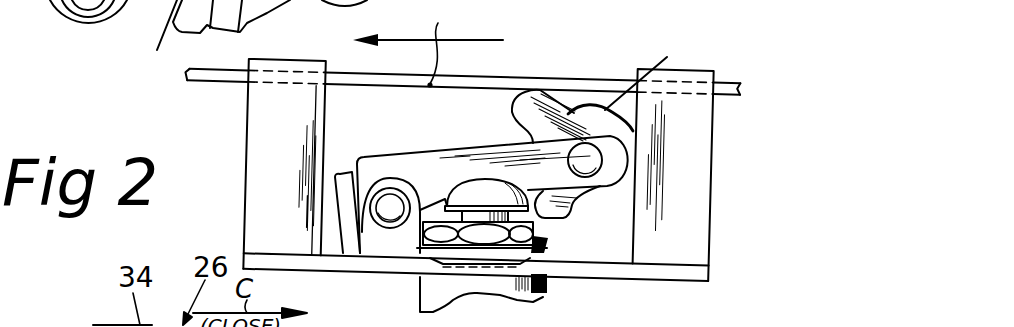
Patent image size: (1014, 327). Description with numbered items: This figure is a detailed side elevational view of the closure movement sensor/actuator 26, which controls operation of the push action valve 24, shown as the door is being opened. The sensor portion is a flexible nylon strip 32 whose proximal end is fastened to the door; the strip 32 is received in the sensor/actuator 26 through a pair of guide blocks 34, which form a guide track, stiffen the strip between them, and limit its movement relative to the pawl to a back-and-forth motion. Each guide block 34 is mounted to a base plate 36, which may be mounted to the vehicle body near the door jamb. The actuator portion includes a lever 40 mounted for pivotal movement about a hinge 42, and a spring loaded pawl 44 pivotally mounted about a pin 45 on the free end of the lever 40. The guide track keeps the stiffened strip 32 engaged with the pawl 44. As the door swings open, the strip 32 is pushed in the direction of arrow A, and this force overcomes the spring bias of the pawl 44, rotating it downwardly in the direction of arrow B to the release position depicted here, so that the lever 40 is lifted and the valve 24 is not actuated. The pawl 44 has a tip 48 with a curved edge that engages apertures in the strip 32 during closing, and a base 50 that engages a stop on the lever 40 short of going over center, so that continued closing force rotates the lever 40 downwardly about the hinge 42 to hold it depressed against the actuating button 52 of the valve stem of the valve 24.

The valve 24 is at (462, 282).
The closure movement sensor/actuator 26 is at (578, 70).
The flexible nylon strip 32 is at (350, 79).
The guide blocks 34 is at (278, 217).
The base plate 36 is at (363, 263).
The lever 40 is at (423, 173).
The hinge 42 is at (388, 205).
The spring loaded pawl 44 is at (545, 127).
The pin 45 is at (588, 164).
The tip 48 is at (513, 103).
The base 50 is at (556, 205).
The actuating button 52 is at (490, 198).